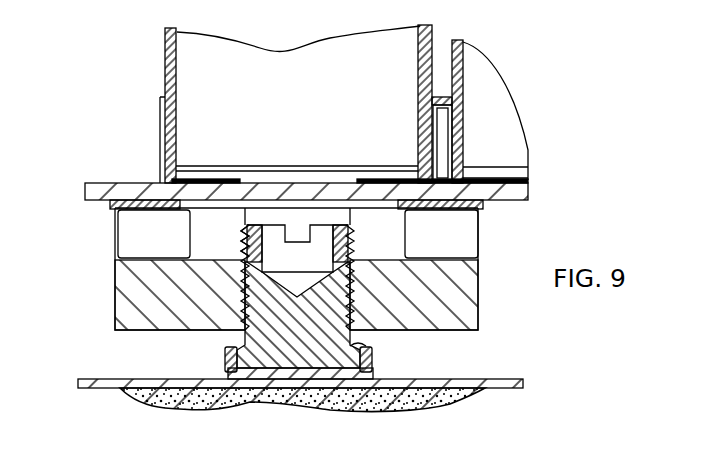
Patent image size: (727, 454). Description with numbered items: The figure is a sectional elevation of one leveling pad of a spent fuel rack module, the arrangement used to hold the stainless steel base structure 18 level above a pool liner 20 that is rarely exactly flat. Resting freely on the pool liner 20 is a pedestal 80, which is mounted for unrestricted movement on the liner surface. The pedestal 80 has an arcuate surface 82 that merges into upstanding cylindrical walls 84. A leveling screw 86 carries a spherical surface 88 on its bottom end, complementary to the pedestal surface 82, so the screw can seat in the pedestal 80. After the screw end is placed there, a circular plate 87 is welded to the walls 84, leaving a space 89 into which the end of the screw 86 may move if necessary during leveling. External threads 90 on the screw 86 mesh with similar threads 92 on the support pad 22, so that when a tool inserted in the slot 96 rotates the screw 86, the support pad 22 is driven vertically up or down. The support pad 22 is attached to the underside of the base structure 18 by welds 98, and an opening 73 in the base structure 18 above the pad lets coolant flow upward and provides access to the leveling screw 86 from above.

The base structure 18 is at (531, 191).
The pool liner 20 is at (507, 379).
The leveling pad 22 is at (464, 322).
The opening 73 is at (300, 183).
The pedestal 80 is at (380, 410).
The arcuate surface 82 is at (292, 405).
The cylindrical walls 84 is at (243, 331).
The leveling screw 86 is at (341, 239).
The circular plate 87 is at (355, 341).
The spherical surface 88 is at (225, 370).
The space 89 is at (372, 355).
The external threads 90 is at (244, 287).
The threads 92 is at (248, 250).
The slot 96 is at (132, 245).
The welds 98 is at (108, 205).